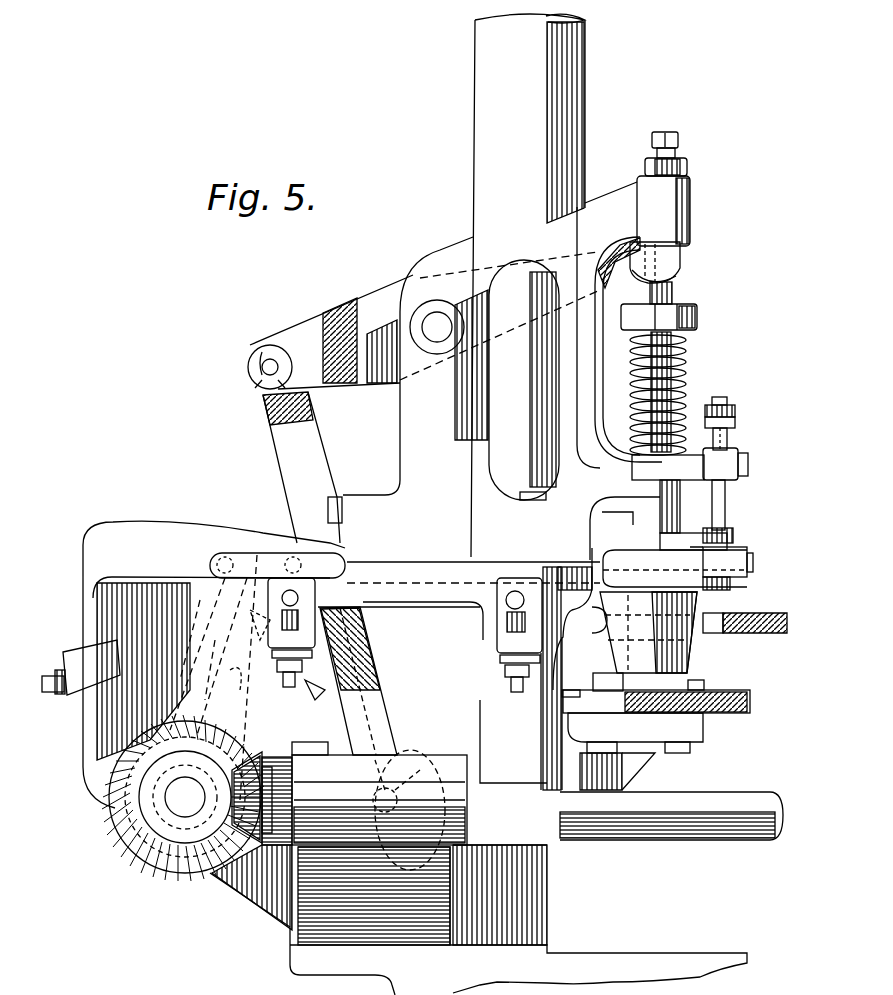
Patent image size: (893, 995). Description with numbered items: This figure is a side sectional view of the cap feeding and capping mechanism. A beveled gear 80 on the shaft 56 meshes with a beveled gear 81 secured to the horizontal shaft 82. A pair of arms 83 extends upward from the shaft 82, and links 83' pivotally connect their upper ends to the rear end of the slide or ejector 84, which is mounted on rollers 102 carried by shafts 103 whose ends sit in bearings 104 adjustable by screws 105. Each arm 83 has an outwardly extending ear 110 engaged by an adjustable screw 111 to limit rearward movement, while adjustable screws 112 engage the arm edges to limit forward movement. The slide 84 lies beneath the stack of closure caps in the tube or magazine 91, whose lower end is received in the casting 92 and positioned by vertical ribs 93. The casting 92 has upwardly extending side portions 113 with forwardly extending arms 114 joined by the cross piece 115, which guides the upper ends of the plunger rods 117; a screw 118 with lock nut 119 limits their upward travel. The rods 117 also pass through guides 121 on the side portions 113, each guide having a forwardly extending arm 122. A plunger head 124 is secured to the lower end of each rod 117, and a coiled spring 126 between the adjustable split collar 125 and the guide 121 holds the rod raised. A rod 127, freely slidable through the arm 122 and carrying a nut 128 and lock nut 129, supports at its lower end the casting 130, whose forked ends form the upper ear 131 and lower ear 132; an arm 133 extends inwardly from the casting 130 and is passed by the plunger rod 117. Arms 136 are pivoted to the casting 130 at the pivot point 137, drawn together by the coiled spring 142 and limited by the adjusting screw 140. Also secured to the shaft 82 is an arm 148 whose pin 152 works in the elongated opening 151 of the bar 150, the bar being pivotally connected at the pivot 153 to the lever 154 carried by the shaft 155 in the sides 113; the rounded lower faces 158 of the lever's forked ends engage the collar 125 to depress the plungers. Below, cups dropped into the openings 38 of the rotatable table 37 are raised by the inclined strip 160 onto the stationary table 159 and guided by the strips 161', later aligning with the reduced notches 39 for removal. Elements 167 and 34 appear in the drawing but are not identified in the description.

The tube or magazine 91 is at (562, 103).
The side portion 113 is at (442, 262).
The forwardly extending arm 114 is at (600, 215).
The lever 154 is at (360, 322).
The pivot 153 is at (275, 362).
The transversely extending shaft 155 is at (440, 342).
The casting 92 is at (478, 523).
The rib or projection 93 is at (522, 494).
The guide 121 is at (658, 476).
The cross piece 115 is at (676, 210).
The lock nut 119 is at (690, 167).
The screw 118 is at (678, 140).
The block 167 is at (660, 256).
The rounded lower face 158 is at (680, 278).
The plunger rod 117 is at (661, 296).
The adjustable split collar 125 is at (698, 316).
The coiled spring 126 is at (680, 366).
The lock nut 129 is at (735, 407).
The nut 128 is at (737, 422).
The rod 127 is at (728, 444).
The forwardly extending arm 122 is at (748, 469).
The upper ear 131 is at (712, 532).
The arm 133 is at (690, 537).
The plunger head 124 is at (740, 545).
The casting 130 is at (738, 557).
The adjusting screw 140 is at (753, 568).
The pivot point 137 is at (740, 580).
The lower ear 132 is at (732, 588).
The recess or opening 38 is at (695, 655).
The bracket 34 is at (588, 532).
The slide or ejector 84 is at (375, 565).
The reduced notch 39 is at (603, 607).
The coiled spring 142 is at (625, 600).
The arm 136 is at (728, 632).
The rotatable table 37 is at (780, 634).
The inclined plate or strip 160 is at (750, 697).
The longitudinally extending strip 161' is at (657, 682).
The stationary table or plate 159 is at (685, 728).
The shaft 56 is at (732, 802).
The elongated opening 151 is at (380, 895).
The arm 148 is at (312, 742).
The pin 152 is at (420, 766).
The bar 150 is at (350, 656).
The arm 83 is at (250, 644).
The link 83' is at (257, 647).
The ear 110 is at (210, 680).
The adjustable screw 111 is at (62, 698).
The shaft 103 is at (282, 599).
The roller 102 is at (353, 622).
The bearing 104 is at (327, 598).
The screw 105 is at (290, 686).
The adjustable screw 112 is at (313, 695).
The horizontal shaft 82 is at (182, 800).
The beveled gear 81 is at (180, 865).
The beveled gear 80 is at (265, 848).